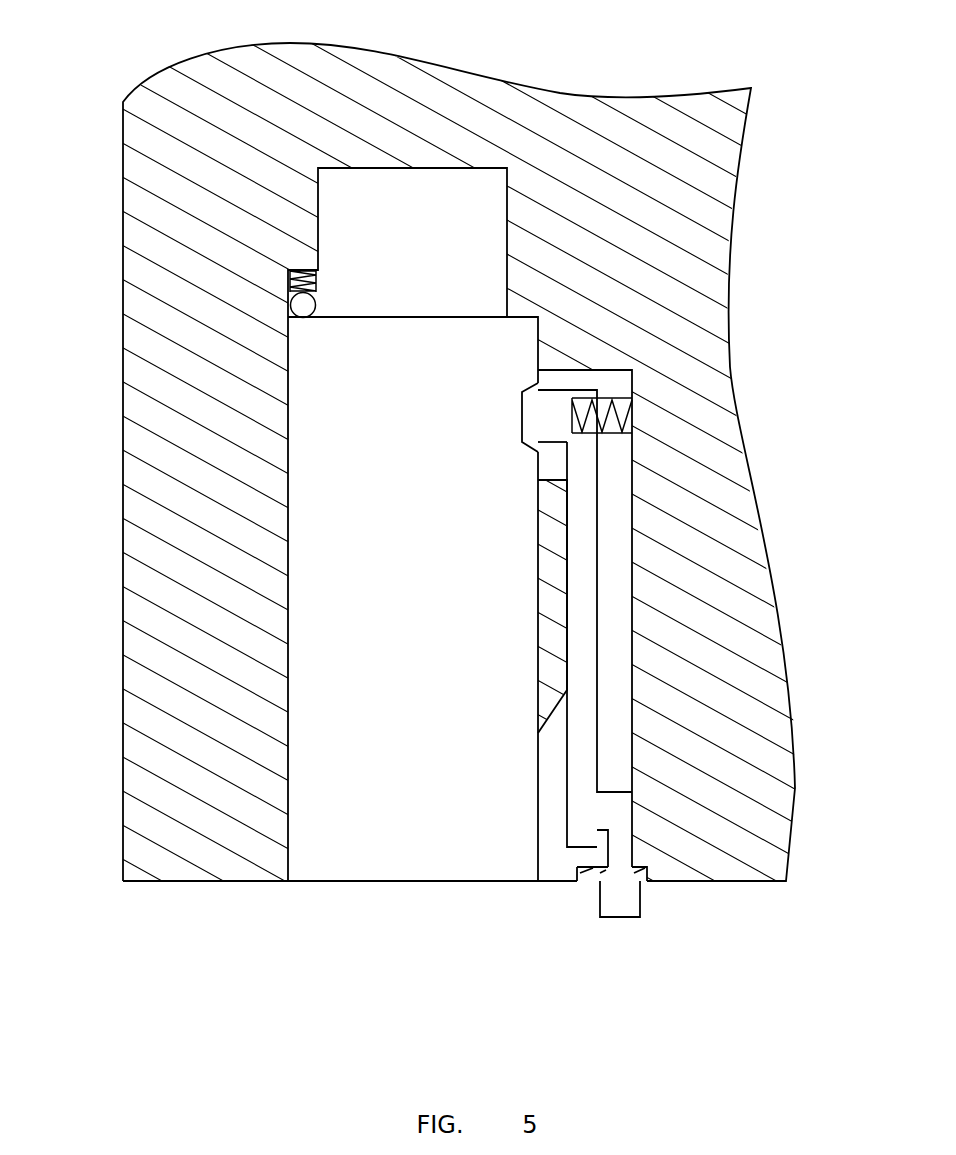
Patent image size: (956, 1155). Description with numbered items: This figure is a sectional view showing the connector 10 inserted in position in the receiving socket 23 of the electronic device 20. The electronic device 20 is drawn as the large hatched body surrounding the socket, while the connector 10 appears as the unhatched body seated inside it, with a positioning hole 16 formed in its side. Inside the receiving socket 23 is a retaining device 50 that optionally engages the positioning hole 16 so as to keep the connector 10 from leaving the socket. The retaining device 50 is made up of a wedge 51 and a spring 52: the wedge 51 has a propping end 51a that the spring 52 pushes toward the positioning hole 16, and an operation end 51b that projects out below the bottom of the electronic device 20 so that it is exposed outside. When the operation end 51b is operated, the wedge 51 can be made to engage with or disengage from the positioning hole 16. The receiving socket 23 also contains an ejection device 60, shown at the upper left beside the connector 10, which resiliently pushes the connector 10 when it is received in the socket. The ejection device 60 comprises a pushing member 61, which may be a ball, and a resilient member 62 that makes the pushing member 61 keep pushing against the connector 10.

The connector 10 is at (440, 861).
The positioning hole 16 is at (527, 383).
The electronic device 20 is at (155, 630).
The receiving socket 23 is at (603, 381).
The retaining device 50 is at (825, 374).
The wedge 51 is at (585, 498).
The propping end 51a is at (548, 403).
The operation end 51b is at (640, 903).
The spring 52 is at (634, 405).
The ejection device 60 is at (72, 247).
The pushing member 61 is at (290, 310).
The resilient member 62 is at (288, 271).